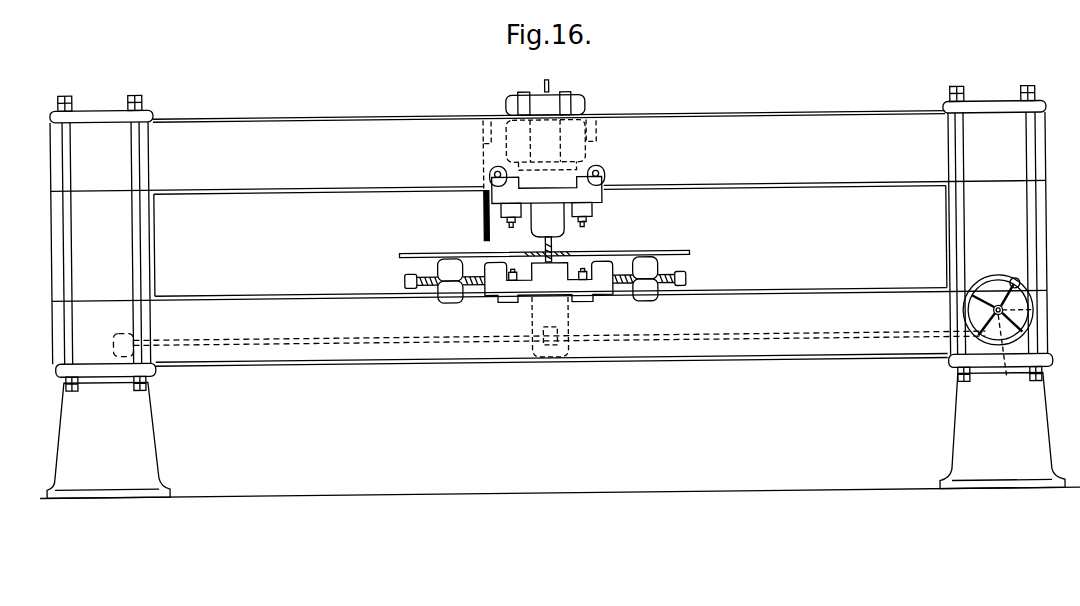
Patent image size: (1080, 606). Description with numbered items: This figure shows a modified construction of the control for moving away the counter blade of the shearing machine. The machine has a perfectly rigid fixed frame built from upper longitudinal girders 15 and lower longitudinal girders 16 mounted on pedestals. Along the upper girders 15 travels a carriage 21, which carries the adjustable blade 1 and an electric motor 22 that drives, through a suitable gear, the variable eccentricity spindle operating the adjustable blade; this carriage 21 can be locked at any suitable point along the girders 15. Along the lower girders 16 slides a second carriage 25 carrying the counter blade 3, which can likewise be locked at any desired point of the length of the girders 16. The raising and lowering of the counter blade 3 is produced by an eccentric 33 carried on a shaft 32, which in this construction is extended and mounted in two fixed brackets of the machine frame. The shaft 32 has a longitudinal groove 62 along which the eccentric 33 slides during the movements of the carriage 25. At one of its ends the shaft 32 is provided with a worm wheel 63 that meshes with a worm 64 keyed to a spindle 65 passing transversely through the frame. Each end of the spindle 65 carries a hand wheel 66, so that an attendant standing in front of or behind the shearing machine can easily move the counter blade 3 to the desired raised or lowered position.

The adjustable blade 1 is at (553, 244).
The counter blade 3 is at (554, 257).
The longitudinal girders 15 is at (548, 152).
The longitudinal girders 16 is at (550, 326).
The carriage 21 is at (545, 202).
The electric motor 22 is at (540, 135).
The second carriage 25 is at (552, 286).
The shaft 32 is at (440, 337).
The eccentric 33 is at (545, 328).
The longitudinal groove 62 is at (507, 343).
The worm wheel 63 is at (1002, 358).
The worm 64 is at (1038, 309).
The spindle 65 is at (996, 311).
The hand wheel 66 is at (1001, 286).